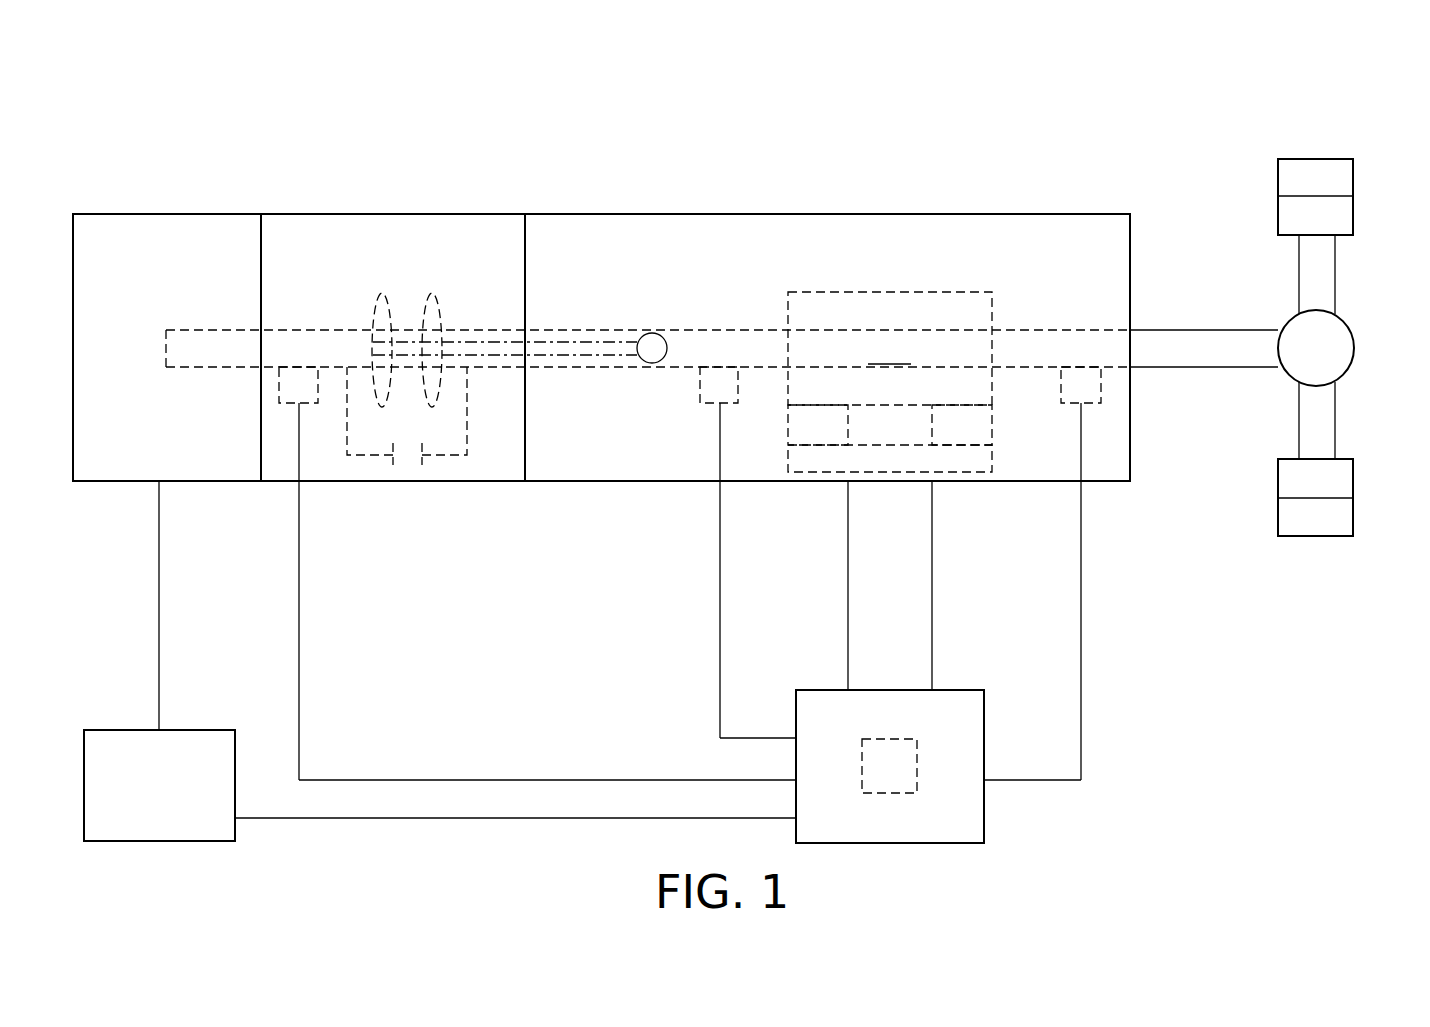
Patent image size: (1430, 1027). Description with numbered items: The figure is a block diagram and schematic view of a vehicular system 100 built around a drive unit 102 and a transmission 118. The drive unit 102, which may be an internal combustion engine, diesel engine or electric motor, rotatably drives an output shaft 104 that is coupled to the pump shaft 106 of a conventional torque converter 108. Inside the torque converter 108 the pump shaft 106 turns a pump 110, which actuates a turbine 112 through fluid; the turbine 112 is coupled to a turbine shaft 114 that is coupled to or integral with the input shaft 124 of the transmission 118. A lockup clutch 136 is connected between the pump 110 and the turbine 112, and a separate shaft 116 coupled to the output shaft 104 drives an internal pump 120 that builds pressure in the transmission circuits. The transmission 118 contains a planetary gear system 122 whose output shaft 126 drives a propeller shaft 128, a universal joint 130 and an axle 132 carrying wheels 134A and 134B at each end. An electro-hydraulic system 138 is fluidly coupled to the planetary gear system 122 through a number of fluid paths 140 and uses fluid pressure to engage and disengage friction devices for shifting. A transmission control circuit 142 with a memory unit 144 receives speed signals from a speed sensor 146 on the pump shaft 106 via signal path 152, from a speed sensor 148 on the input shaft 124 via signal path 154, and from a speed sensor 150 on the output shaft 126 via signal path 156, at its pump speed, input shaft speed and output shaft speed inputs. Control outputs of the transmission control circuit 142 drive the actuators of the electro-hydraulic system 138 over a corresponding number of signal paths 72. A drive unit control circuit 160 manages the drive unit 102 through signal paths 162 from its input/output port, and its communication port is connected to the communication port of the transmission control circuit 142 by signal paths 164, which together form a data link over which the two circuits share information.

The vehicular system 100 is at (118, 140).
The drive unit 102 is at (200, 213).
The output shaft 104 is at (200, 328).
The pump shaft 106 is at (302, 328).
The torque converter 108 is at (380, 213).
The pump 110 is at (388, 296).
The turbine 112 is at (425, 296).
The turbine shaft 114 is at (475, 328).
The shaft 116 is at (573, 357).
The transmission 118 is at (868, 213).
The internal pump 120 is at (658, 332).
The planetary gear system 122 is at (890, 348).
The input shaft 124 is at (740, 328).
The output shaft 126 is at (1060, 328).
The propeller shaft 128 is at (1192, 328).
The universal joint 130 is at (1355, 345).
The axle 132 is at (1337, 274).
The wheel 134A is at (1311, 158).
The wheel 134B is at (1311, 537).
The lockup clutch 136 is at (420, 460).
The electro-hydraulic system 138 is at (958, 472).
The fluid paths 140 is at (983, 430).
The transmission control circuit 142 is at (923, 845).
The memory unit 144 is at (917, 757).
The speed sensor 146 is at (279, 380).
The speed sensor 148 is at (698, 380).
The speed sensor 150 is at (1101, 390).
The signal path 152 is at (437, 779).
The signal path 154 is at (720, 648).
The signal path 156 is at (1081, 618).
The drive unit control circuit 160 is at (112, 730).
The signal paths 162 is at (159, 560).
The signal paths 164 is at (372, 820).
The signal paths 72 is at (970, 595).